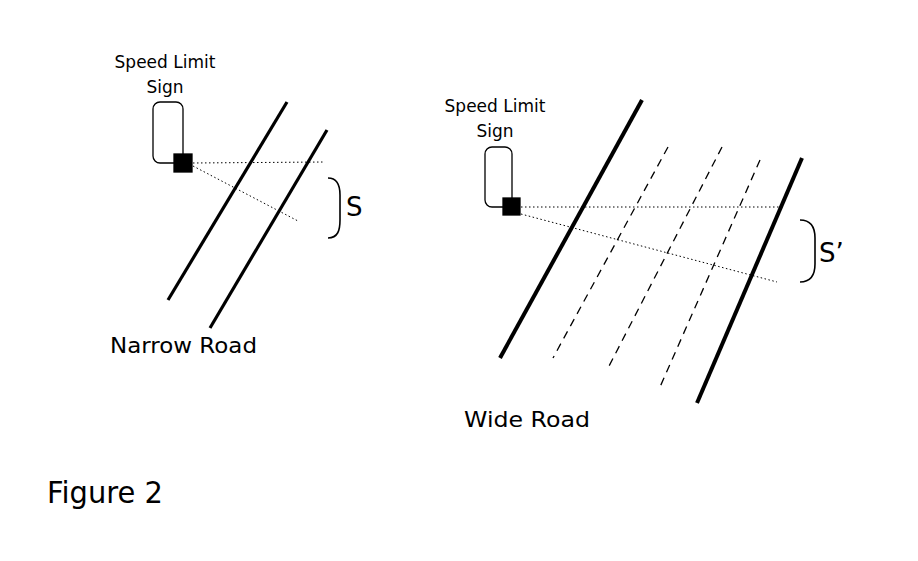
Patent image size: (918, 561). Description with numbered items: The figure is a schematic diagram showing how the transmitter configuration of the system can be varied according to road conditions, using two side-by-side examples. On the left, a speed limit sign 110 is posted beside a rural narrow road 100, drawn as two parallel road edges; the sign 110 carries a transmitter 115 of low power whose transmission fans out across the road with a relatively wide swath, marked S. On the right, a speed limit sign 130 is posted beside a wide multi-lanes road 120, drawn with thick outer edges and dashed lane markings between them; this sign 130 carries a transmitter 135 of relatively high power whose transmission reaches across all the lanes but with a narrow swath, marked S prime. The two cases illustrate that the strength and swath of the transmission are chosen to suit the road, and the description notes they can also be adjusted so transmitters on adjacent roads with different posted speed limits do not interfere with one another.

The rural narrow road 100 is at (237, 284).
The sign 110 is at (153, 132).
The transmitter 115 is at (183, 176).
The wide multi-lanes road 120 is at (660, 387).
The sign 130 is at (485, 175).
The transmitter 135 is at (512, 220).